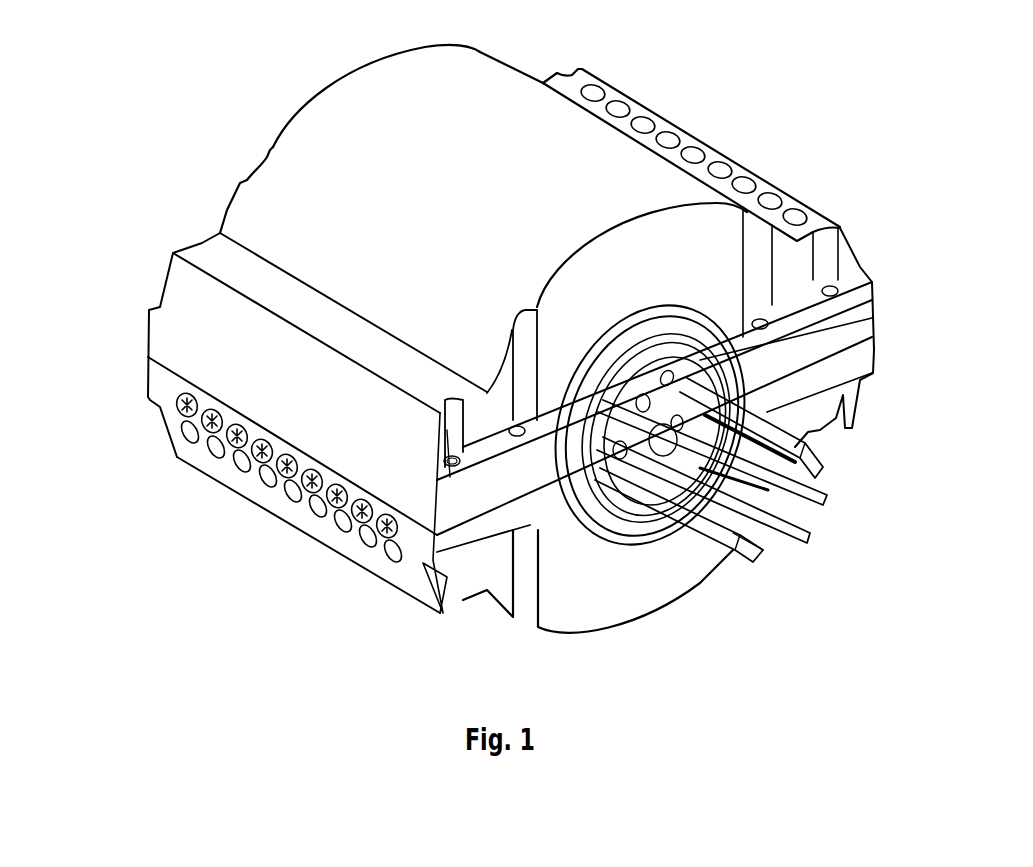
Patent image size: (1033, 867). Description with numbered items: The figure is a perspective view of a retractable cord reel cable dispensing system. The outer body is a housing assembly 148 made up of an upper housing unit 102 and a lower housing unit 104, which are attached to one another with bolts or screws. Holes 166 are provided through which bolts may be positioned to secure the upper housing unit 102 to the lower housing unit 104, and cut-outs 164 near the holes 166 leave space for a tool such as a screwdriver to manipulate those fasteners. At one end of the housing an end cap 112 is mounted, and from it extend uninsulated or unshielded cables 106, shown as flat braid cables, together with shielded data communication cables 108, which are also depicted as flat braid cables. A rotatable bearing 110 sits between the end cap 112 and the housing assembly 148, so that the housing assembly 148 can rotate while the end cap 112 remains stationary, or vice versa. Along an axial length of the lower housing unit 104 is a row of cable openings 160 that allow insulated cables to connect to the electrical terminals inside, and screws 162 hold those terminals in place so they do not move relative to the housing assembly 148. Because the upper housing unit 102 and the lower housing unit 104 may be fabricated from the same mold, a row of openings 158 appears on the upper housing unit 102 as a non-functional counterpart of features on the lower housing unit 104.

The upper housing unit 102 is at (312, 130).
The lower housing unit 104 is at (637, 603).
The unshielded cables 106 is at (805, 462).
The shielded data communication cables 108 is at (790, 537).
The rotatable bearing 110 is at (745, 333).
The end cap 112 is at (673, 407).
The housing assembly 148 is at (183, 442).
The openings 158 is at (743, 186).
The cable openings 160 is at (243, 457).
The screws 162 is at (360, 517).
The cut-outs 164 is at (450, 430).
The holes 166 is at (457, 466).